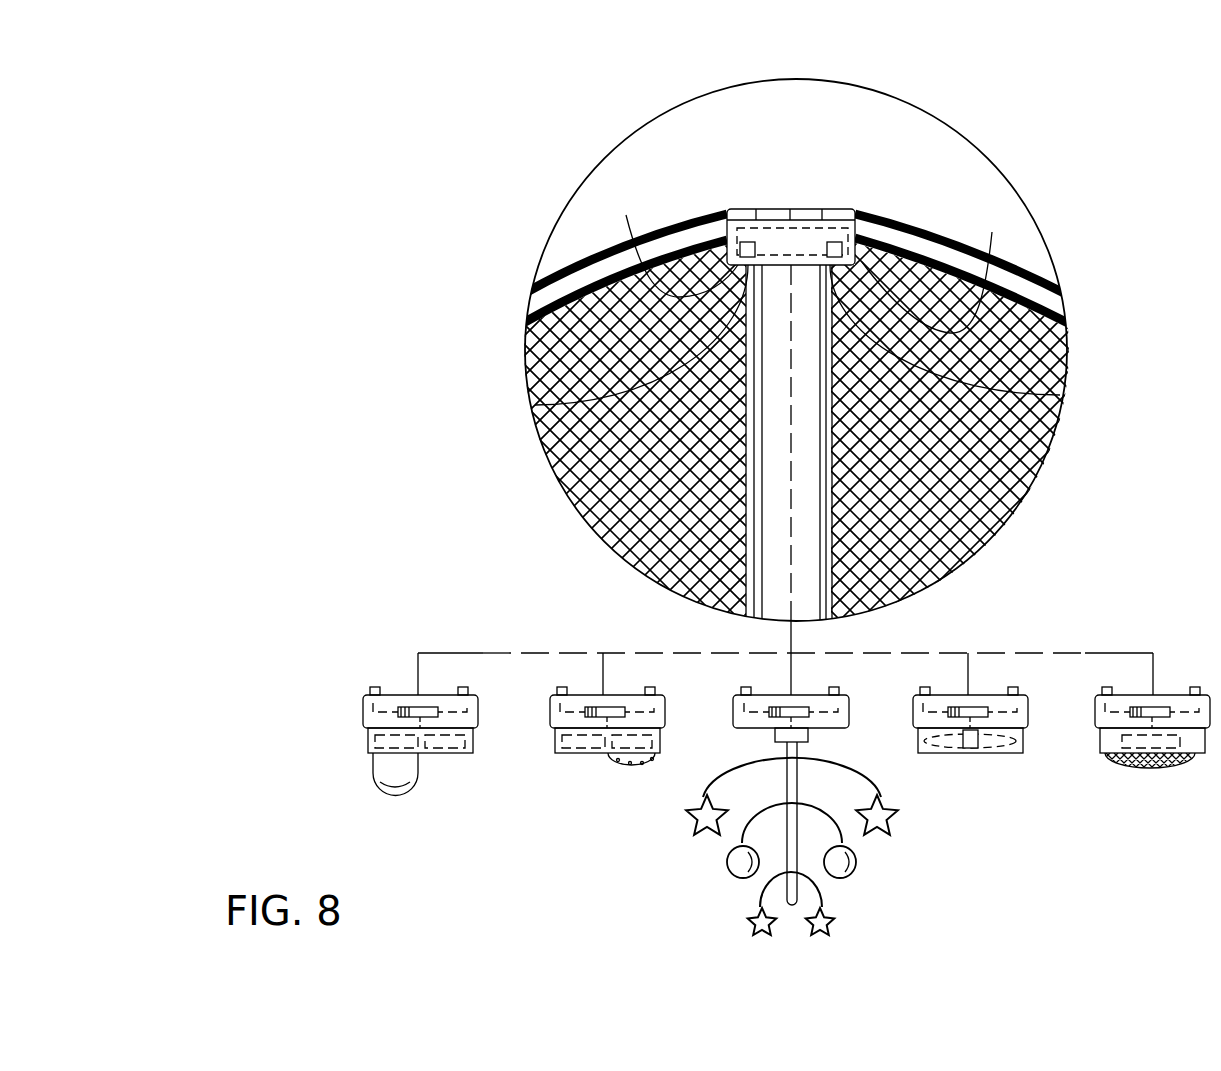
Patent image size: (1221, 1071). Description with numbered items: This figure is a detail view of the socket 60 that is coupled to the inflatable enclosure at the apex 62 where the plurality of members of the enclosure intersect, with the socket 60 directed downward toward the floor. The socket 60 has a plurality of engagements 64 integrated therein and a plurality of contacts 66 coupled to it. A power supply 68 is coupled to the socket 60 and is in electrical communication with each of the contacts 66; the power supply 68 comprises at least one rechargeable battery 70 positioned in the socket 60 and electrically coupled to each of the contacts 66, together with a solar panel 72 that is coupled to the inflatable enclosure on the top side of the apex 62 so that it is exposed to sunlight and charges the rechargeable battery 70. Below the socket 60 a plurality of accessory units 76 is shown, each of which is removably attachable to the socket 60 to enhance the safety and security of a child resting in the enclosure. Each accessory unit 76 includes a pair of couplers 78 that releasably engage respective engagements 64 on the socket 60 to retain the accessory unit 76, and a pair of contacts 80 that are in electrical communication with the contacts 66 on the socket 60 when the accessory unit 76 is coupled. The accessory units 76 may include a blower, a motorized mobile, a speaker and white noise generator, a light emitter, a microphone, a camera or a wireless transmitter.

The socket 60 is at (918, 225).
The apex 62 is at (803, 165).
The engagements 64 is at (796, 256).
The contacts 66 is at (750, 242).
The power supply 68 is at (1060, 395).
The rechargeable battery 70 is at (535, 405).
The solar panel 72 is at (772, 208).
The accessory units 76 is at (746, 733).
The couplers 78 is at (378, 687).
The contacts 80 is at (363, 710).